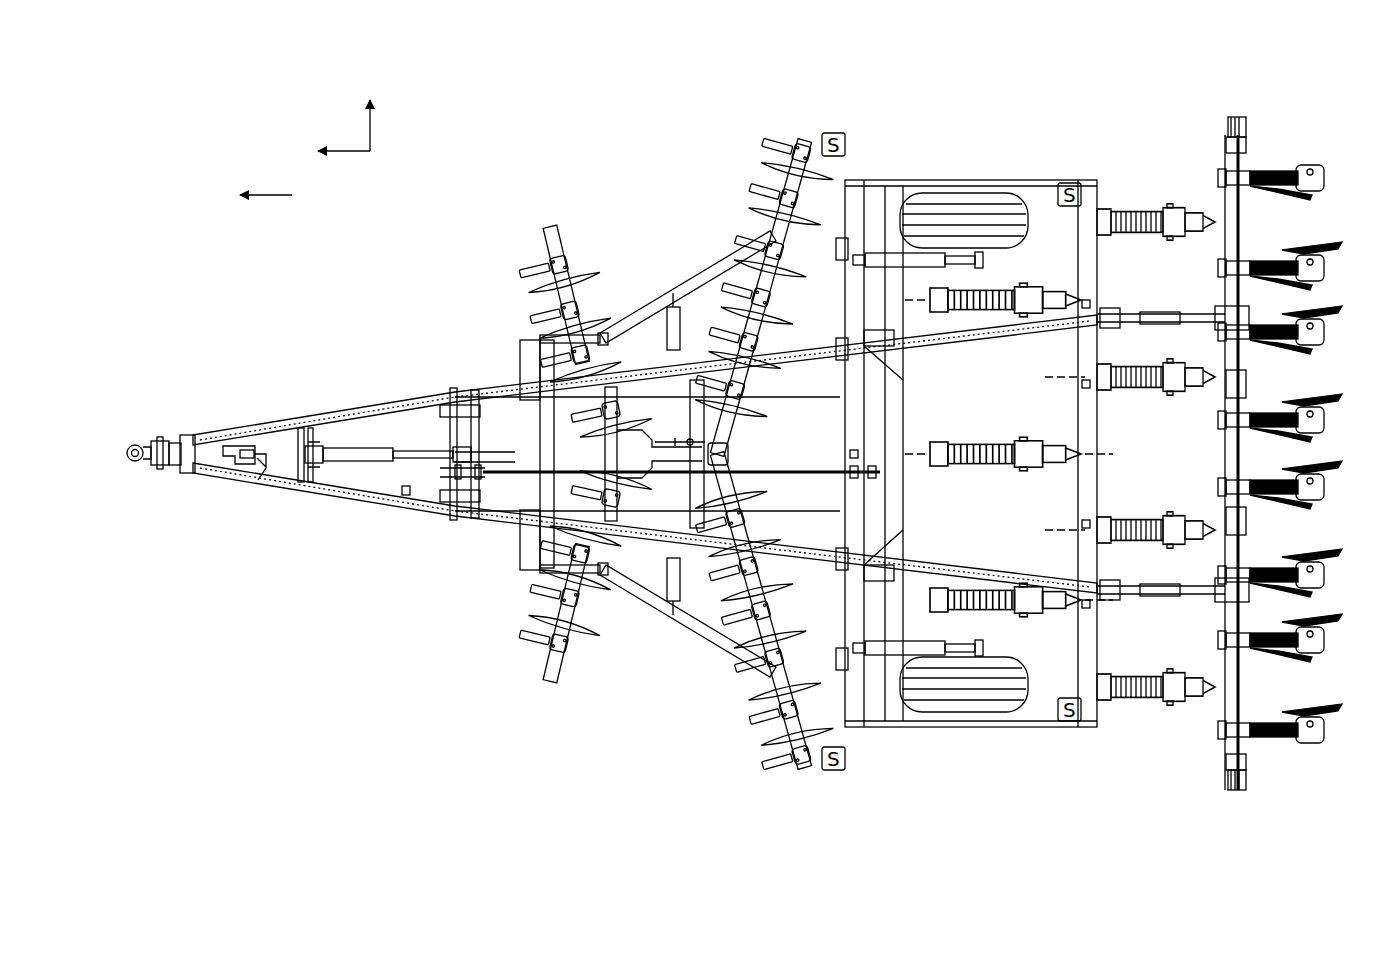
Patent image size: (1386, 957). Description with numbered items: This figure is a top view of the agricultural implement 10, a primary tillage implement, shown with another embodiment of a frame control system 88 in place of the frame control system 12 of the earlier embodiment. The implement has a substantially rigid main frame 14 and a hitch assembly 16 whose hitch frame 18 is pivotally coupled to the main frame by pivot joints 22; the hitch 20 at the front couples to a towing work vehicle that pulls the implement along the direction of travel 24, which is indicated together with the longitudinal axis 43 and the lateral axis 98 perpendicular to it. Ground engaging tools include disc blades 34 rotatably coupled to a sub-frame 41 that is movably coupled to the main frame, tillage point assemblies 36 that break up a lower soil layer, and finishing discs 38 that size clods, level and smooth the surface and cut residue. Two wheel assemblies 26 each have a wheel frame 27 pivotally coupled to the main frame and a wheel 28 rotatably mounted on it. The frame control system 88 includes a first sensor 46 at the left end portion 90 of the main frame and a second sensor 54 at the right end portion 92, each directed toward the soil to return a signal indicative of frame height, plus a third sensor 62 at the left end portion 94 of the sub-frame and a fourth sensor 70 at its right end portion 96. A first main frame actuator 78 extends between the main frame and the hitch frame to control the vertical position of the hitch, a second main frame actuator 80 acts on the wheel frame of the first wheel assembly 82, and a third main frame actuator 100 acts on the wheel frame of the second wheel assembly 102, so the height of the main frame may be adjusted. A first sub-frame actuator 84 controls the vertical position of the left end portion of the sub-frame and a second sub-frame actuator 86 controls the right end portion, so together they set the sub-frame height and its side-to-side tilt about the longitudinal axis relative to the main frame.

The agricultural implement 10 is at (432, 248).
The frame control system 12 is at (375, 545).
The main frame 14 is at (780, 360).
The hitch assembly 16 is at (260, 500).
The hitch frame 18 is at (290, 490).
The hitch 20 is at (140, 447).
The pivot joint 22 is at (440, 545).
The direction of travel 24 is at (272, 195).
The wheel assembly 26 is at (915, 165).
The wheel frame 27 is at (960, 255).
The wheel 28 is at (930, 215).
The disc blade 34 is at (530, 685).
The tillage point assembly 36 is at (1093, 213).
The finishing disc 38 is at (1283, 760).
The sub-frame 41 is at (560, 226).
The longitudinal axis 43 is at (348, 151).
The first sensor 46 is at (1068, 700).
The second sensor 54 is at (1080, 195).
The third sensor 62 is at (814, 776).
The fourth sensor 70 is at (830, 133).
The first main frame actuator 78 is at (350, 450).
The second main frame actuator 80 is at (890, 652).
The first wheel assembly 82 is at (967, 732).
The first sub-frame actuator 84 is at (680, 605).
The second sub-frame actuator 86 is at (685, 315).
The frame control system 88 is at (645, 185).
The left end portion 90 is at (1068, 765).
The right end portion 92 is at (1005, 105).
The left end portion 94 is at (781, 799).
The right end portion 96 is at (739, 416).
The lateral axis 98 is at (372, 130).
The third main frame actuator 100 is at (895, 258).
The second wheel assembly 102 is at (992, 426).